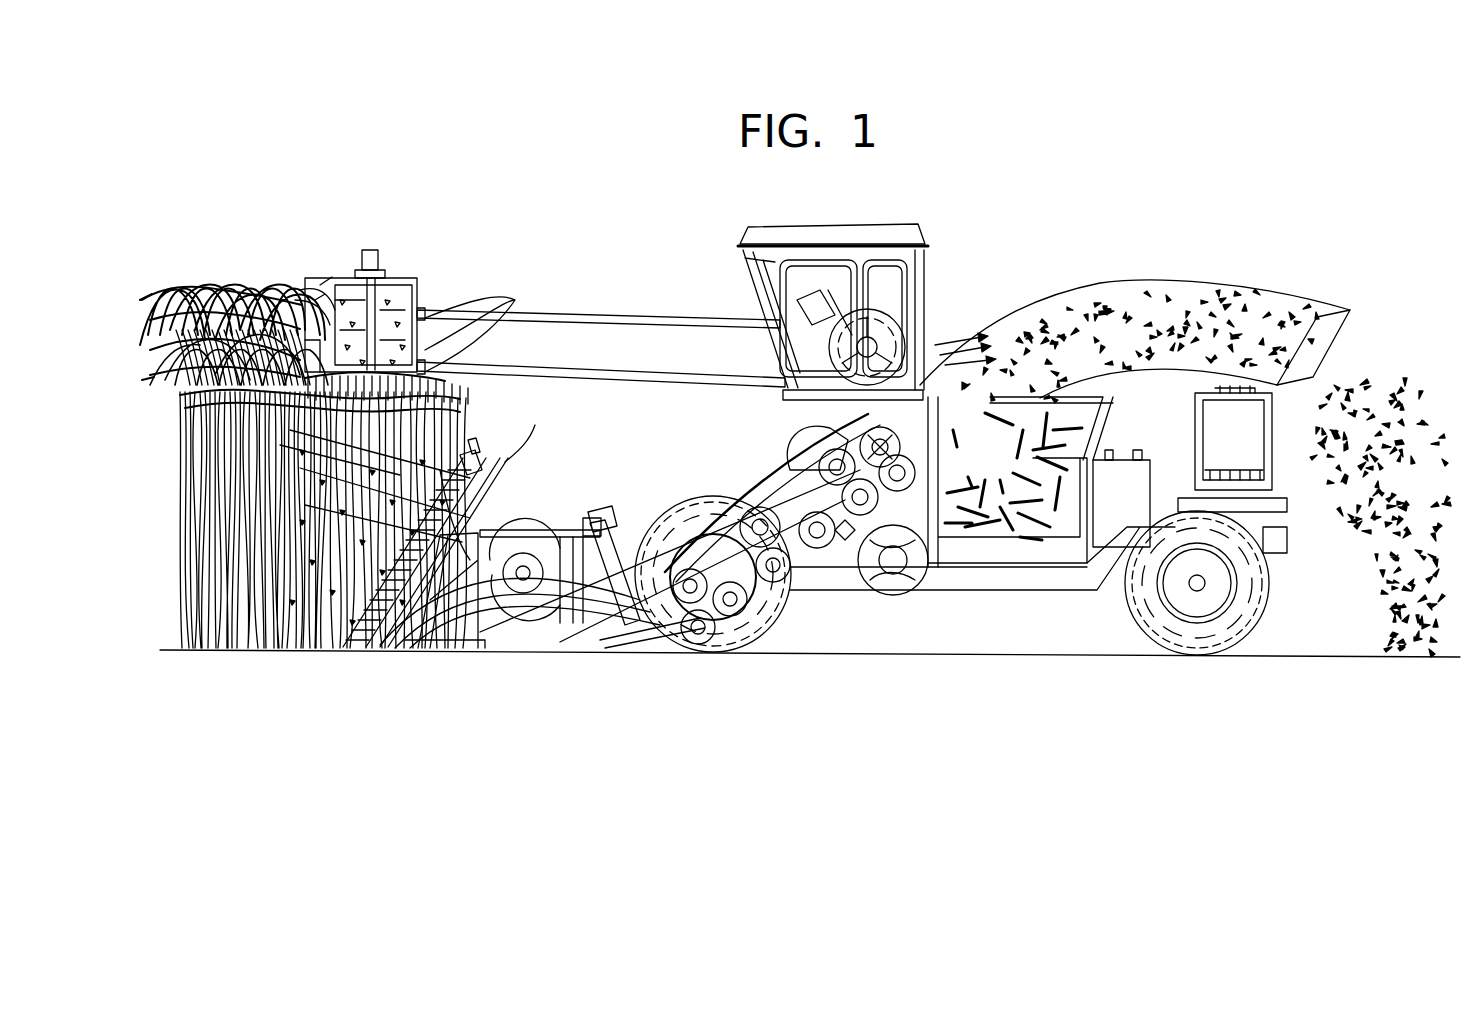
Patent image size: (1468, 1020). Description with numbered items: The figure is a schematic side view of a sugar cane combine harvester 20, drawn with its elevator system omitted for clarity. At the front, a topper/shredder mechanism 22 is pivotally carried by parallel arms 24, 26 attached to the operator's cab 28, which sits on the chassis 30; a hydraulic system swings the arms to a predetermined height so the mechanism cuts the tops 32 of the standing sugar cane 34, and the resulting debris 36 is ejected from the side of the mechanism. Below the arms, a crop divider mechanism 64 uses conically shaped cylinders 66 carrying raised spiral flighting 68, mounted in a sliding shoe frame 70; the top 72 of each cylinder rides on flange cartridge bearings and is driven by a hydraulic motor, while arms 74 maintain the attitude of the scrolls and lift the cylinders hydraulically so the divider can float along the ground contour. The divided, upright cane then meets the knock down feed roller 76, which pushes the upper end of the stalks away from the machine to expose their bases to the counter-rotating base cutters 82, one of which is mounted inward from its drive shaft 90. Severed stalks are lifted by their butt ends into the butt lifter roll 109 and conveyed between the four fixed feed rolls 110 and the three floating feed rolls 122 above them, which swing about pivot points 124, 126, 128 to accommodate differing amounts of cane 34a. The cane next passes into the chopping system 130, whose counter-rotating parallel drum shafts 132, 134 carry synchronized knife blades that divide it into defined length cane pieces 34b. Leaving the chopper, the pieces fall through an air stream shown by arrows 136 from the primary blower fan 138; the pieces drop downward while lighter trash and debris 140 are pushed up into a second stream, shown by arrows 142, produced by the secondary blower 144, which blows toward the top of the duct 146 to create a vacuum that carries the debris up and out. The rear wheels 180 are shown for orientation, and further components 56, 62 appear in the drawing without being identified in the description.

The sugar cane combine harvester 20 is at (1113, 685).
The topper/shredder mechanism 22 is at (398, 280).
The parallel arm 24 is at (600, 314).
The parallel arm 26 is at (648, 365).
The operator's cab 28 is at (845, 236).
The chassis 30 is at (1020, 650).
The tops 32 is at (215, 300).
The sugar cane 34 is at (181, 450).
The cane 34a is at (830, 648).
The cane pieces 34b is at (1027, 537).
The debris 36 is at (312, 285).
The header support linkage 56 is at (345, 290).
The header guide 62 is at (320, 288).
The crop divider mechanism 64 is at (542, 428).
The conically shaped cylinders 66 is at (455, 445).
The raised spiral flighting 68 is at (495, 491).
The sliding shoe frame 70 is at (420, 650).
The top of the cylinders 72 is at (476, 455).
The arms 74 is at (498, 536).
The knock down feed roller 76 is at (590, 520).
The base cutters 82 is at (620, 650).
The drive shaft 90 is at (625, 528).
The butt lifter roll 109 is at (700, 650).
The fixed feed rolls 110 is at (865, 505).
The floating feed rolls 122 is at (732, 470).
The pivot point 124 is at (808, 478).
The pivot point 126 is at (703, 494).
The pivot point 128 is at (642, 650).
The chopping system 130 is at (860, 455).
The drum shaft 132 is at (900, 456).
The drum shaft 134 is at (950, 460).
The arrows indicating air stream 136 is at (960, 530).
The primary blower fan 138 is at (955, 545).
The trash and debris 140 is at (1392, 400).
The arrows indicating air stream 142 is at (950, 345).
The secondary blower 144 is at (878, 325).
The duct 146 is at (1170, 292).
The rear wheels 180 is at (1262, 598).